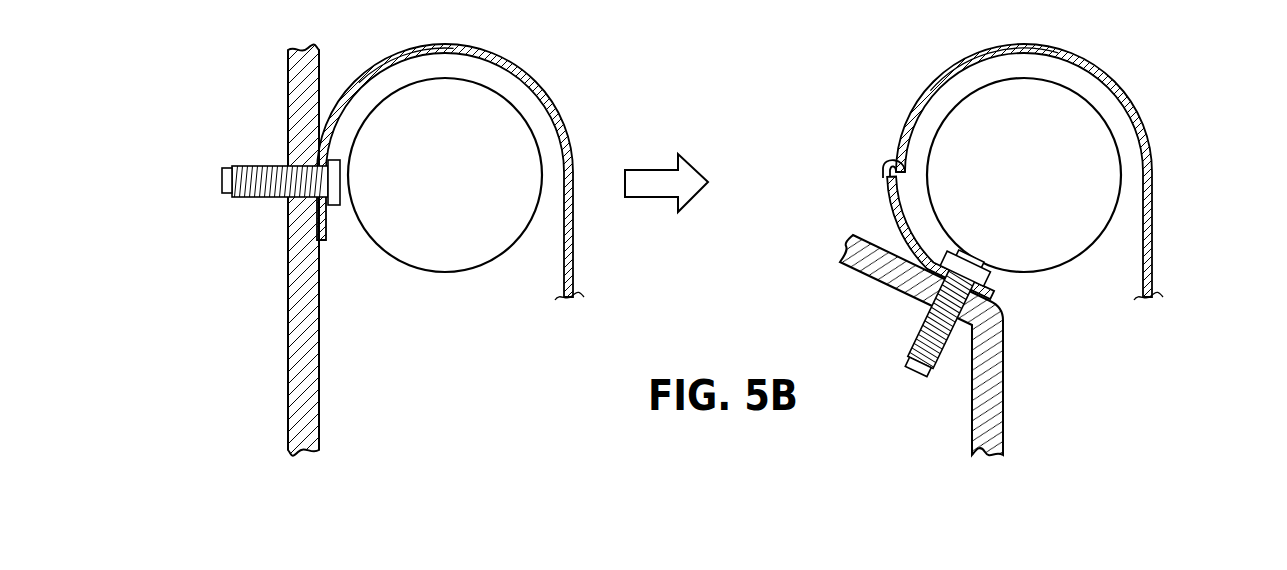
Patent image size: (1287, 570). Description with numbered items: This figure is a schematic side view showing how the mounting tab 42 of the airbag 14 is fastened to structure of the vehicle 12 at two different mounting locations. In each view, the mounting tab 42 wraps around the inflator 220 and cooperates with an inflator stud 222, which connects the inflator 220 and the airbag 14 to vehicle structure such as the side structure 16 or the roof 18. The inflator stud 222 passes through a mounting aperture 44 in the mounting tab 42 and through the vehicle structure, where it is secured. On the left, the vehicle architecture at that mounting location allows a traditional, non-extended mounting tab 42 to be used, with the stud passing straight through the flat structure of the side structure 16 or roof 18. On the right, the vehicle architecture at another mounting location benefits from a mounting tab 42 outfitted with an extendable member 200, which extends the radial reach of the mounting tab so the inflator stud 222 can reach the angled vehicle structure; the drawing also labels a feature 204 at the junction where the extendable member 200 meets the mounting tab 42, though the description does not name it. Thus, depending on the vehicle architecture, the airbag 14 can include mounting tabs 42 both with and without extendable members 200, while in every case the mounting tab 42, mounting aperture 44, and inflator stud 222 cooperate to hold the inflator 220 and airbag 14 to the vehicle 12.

The vehicle 12 is at (651, 249).
The airbag 14 is at (572, 153).
The side structure 16 is at (651, 249).
The vehicle roof 18 is at (305, 96).
The mounting tab 42 is at (370, 72).
The mounting aperture 44 is at (330, 208).
The extendable member 200 is at (856, 185).
The hook 204 is at (905, 238).
The inflator 220 is at (505, 145).
The inflator stud 222 is at (270, 182).